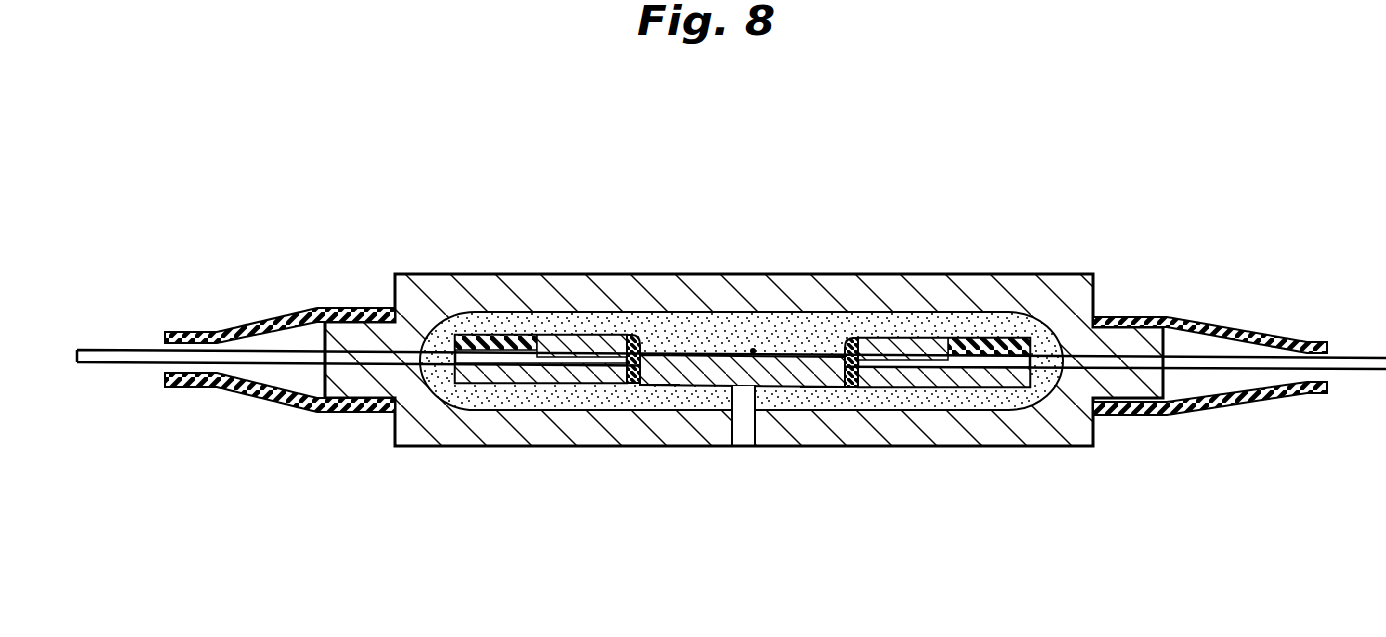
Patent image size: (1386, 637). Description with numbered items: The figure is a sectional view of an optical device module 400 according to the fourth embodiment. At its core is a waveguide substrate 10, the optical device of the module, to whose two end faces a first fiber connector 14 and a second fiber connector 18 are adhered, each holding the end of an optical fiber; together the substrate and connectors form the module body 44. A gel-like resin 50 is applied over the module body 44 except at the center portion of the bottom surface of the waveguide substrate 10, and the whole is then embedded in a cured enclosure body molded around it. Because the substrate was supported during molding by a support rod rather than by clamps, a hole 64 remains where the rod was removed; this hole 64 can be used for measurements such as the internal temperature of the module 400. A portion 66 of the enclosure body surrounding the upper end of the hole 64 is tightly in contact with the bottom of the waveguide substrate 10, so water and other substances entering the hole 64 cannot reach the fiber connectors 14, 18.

The optical device module 400 is at (1113, 249).
The gel-like resin 50 is at (690, 325).
The module body 44 is at (754, 351).
The first fiber connector 14 is at (532, 412).
The second fiber connector 18 is at (927, 407).
The waveguide substrate 10 is at (694, 387).
The hole 64 is at (742, 433).
The portion of the enclosure body 66 is at (663, 386).